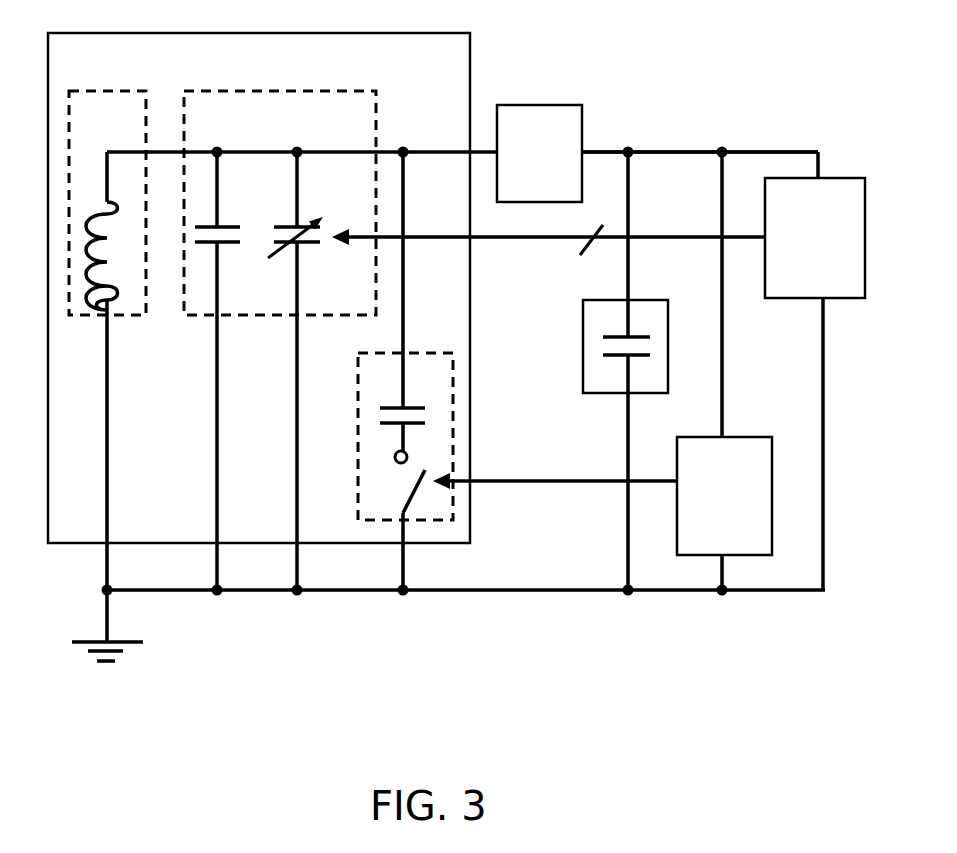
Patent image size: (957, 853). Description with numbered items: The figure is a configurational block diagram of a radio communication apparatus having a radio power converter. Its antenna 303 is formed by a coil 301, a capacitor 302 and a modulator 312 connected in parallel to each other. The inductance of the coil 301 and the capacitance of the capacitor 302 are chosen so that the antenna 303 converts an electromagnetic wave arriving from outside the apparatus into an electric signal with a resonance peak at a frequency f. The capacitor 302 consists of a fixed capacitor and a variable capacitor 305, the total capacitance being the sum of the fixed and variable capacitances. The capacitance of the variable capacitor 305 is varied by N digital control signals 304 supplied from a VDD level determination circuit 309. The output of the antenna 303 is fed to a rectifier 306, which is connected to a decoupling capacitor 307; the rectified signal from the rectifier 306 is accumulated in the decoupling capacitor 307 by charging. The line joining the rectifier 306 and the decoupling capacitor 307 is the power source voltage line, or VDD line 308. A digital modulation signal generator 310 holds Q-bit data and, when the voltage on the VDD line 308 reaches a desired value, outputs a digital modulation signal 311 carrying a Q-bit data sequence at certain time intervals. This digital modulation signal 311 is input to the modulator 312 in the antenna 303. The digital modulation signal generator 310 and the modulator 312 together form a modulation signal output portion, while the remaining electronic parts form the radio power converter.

The coil 301 is at (107, 203).
The capacitor 302 is at (280, 340).
The antenna 303 is at (259, 287).
The digital control signals 304 is at (520, 237).
The variable capacitor 305 is at (305, 248).
The rectifier 306 is at (539, 153).
The decoupling capacitor 307 is at (573, 328).
The VDD line 308 is at (665, 150).
The VDD level determination circuit 309 is at (815, 238).
The digital modulation signal generator 310 is at (724, 496).
The digital modulation signal 311 is at (510, 487).
The modulator 312 is at (340, 418).